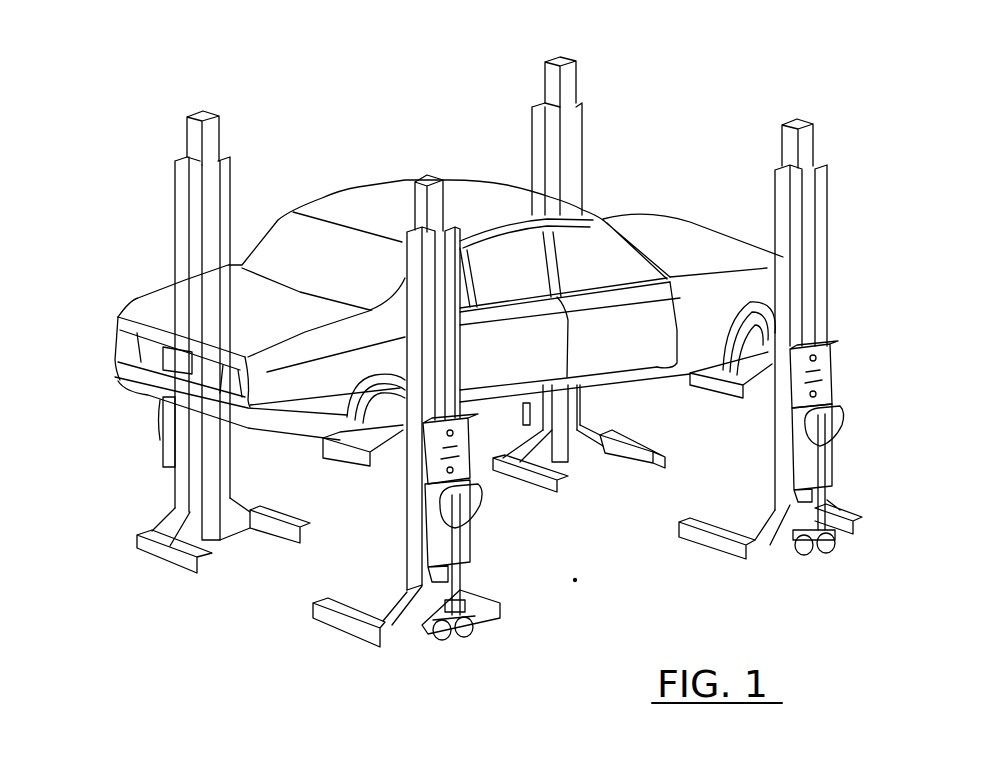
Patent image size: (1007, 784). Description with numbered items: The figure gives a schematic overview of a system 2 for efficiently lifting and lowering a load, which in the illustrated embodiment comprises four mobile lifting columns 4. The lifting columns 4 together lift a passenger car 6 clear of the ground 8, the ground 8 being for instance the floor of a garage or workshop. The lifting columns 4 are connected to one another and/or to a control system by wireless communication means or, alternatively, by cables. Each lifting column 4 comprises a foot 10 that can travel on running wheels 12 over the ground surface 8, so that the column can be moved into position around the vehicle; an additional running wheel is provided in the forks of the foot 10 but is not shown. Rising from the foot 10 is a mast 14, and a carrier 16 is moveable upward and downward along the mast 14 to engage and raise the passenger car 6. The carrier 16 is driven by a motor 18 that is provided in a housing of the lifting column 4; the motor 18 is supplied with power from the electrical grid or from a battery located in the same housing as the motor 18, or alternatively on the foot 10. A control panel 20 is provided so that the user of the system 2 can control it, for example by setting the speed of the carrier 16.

The system 2 is at (747, 100).
The mobile lifting column 4 is at (504, 399).
The passenger car 6 is at (663, 230).
The ground 8 is at (575, 580).
The foot 10 is at (330, 618).
The running wheels 12 is at (417, 632).
The mast 14 is at (180, 217).
The carrier 16 is at (720, 387).
The motor 18 is at (795, 462).
The control panel 20 is at (835, 360).